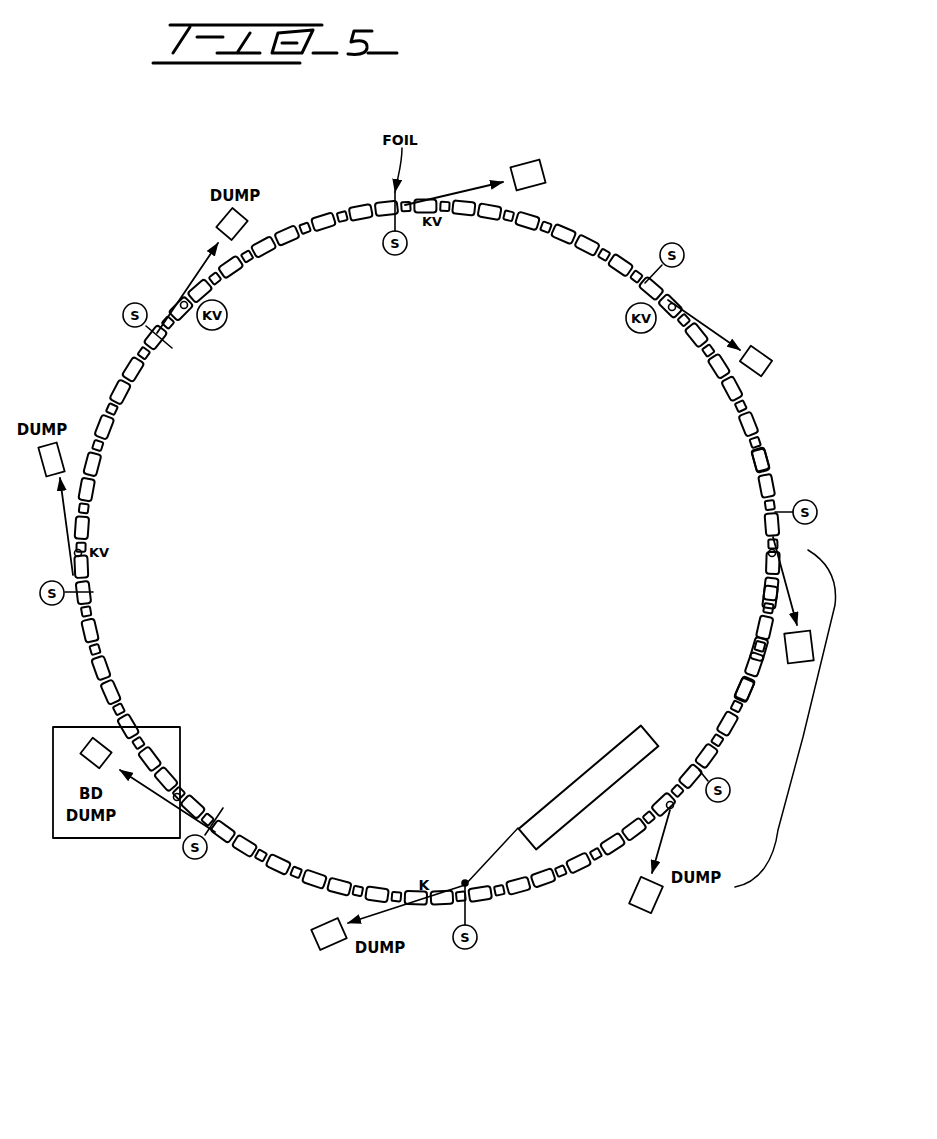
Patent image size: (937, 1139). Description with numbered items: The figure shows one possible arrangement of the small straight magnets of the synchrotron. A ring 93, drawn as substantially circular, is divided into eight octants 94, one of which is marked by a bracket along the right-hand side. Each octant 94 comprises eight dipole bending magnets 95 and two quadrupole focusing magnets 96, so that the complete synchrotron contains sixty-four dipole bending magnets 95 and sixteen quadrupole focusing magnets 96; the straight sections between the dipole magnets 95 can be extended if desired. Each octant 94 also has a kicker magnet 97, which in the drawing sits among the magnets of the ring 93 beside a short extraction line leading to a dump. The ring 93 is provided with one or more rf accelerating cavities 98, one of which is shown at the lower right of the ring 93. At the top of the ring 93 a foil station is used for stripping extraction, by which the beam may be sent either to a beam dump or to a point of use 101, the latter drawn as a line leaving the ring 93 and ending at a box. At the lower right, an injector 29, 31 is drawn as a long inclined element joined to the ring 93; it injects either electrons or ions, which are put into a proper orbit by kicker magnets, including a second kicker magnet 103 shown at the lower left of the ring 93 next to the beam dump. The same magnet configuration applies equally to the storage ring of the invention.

The point of use 101 is at (481, 181).
The ring 93 is at (767, 456).
The kicker magnet 97 is at (781, 554).
The quadrupole focusing magnet 96 is at (763, 597).
The dipole bending magnet 95 is at (740, 688).
The octant 94 is at (803, 737).
The injector 29 is at (583, 788).
The injector 31 is at (605, 752).
The rf accelerating cavity 98 is at (667, 801).
The second kicker magnet 103 is at (182, 785).